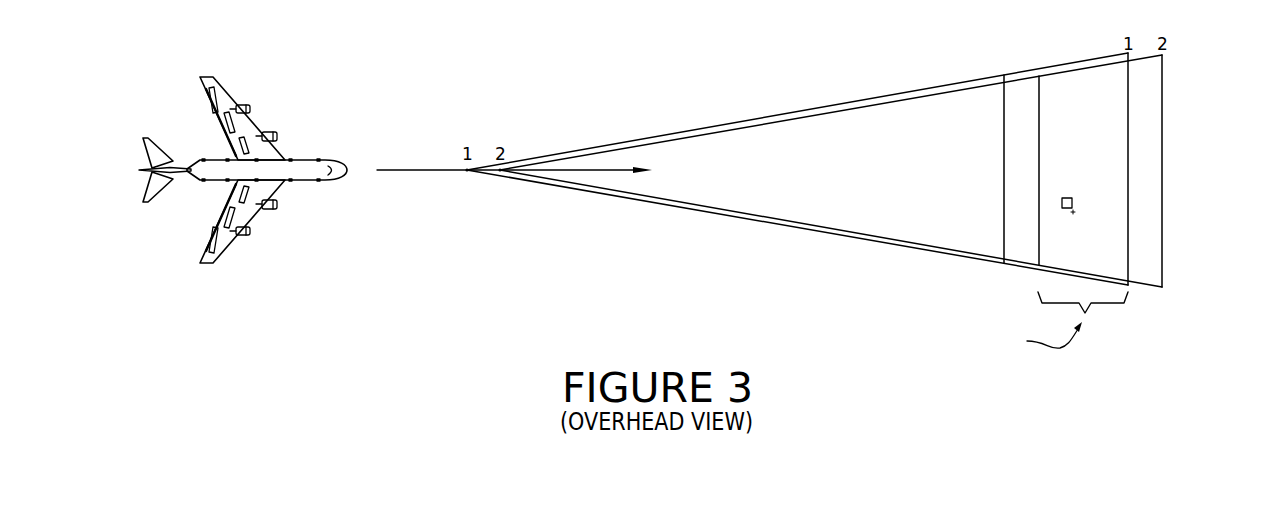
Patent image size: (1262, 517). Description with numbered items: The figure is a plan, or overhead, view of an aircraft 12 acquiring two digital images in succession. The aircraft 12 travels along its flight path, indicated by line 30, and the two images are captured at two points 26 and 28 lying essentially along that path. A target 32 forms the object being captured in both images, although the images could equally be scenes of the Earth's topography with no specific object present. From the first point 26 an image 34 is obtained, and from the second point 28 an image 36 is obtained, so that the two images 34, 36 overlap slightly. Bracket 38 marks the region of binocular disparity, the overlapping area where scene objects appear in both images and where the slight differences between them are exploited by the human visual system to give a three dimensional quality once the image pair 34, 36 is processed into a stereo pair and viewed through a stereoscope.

The aircraft 12 is at (300, 160).
The image point 26 is at (467, 172).
The image point 28 is at (500, 172).
The flight path line 30 is at (612, 171).
The target 32 is at (1067, 197).
The image 34 is at (1067, 63).
The image 36 is at (1165, 130).
The bracket 38 is at (1085, 313).